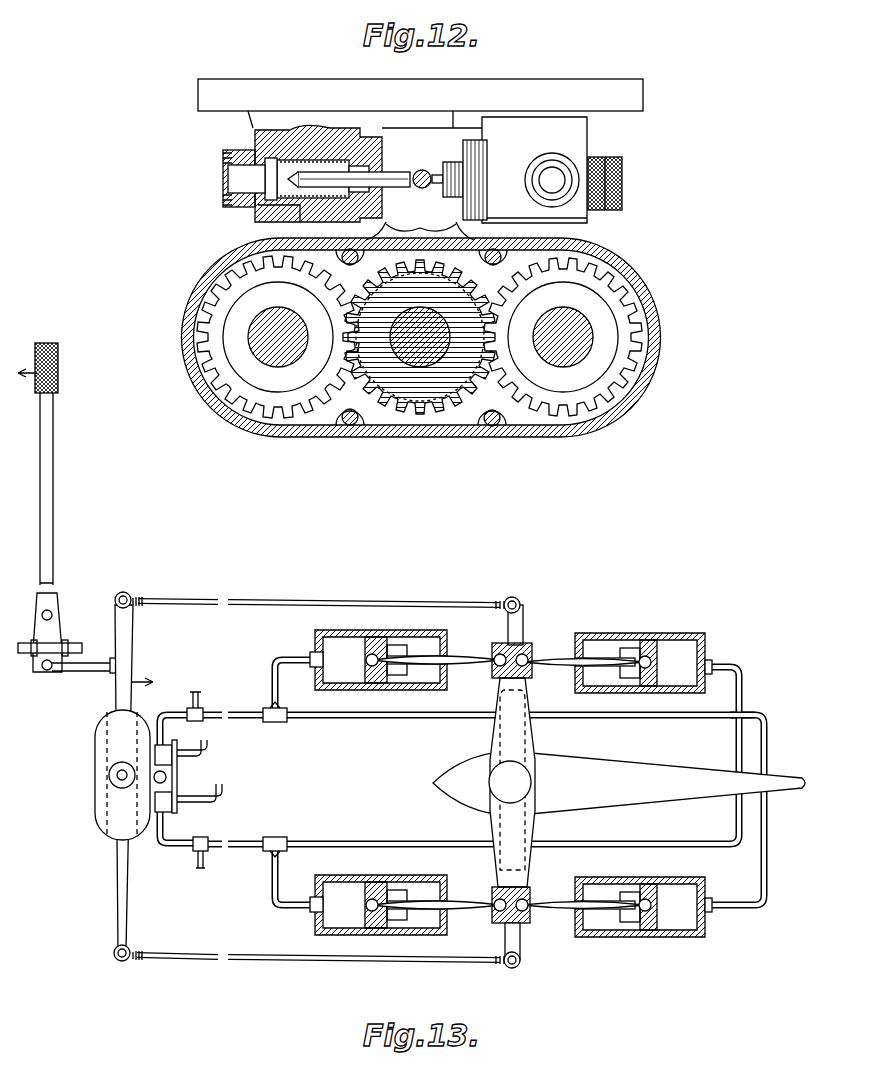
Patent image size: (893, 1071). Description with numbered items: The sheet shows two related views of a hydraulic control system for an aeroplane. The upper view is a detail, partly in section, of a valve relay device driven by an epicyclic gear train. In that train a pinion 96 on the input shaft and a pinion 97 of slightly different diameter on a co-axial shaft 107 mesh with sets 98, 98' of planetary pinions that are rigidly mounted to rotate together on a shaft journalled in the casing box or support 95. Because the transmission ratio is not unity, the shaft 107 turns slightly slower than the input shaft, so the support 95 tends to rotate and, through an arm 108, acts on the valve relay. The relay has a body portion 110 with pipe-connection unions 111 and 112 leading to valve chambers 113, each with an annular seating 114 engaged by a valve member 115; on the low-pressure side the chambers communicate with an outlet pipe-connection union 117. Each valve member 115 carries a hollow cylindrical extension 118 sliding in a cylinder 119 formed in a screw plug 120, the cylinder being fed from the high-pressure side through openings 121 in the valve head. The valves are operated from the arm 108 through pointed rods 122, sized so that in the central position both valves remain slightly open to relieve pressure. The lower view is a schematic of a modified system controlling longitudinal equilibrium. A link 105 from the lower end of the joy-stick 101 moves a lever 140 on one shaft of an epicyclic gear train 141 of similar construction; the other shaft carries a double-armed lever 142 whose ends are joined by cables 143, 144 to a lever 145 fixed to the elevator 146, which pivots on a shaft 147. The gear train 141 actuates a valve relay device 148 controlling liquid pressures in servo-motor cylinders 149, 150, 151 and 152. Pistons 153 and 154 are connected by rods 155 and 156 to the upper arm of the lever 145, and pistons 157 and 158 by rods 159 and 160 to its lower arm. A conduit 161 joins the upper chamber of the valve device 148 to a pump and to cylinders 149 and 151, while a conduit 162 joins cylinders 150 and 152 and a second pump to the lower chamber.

In FIG. 12, the casing box or support 95 is at (660, 338).
In FIG. 12, the pinion 96 is at (470, 398).
In FIG. 12, the pinion 97 is at (432, 410).
In FIG. 12, the set of planetary pinions 98 is at (581, 337).
In FIG. 12, the set of planetary pinions 98' is at (278, 352).
In FIG. 13, the joy-stick 101 is at (52, 478).
In FIG. 13, the link 105 is at (88, 671).
In FIG. 12, the shaft 107 is at (410, 355).
In FIG. 12, the arm 108 is at (424, 169).
In FIG. 12, the body portion 110 is at (340, 96).
In FIG. 12, the pipe-connection union 111 is at (228, 165).
In FIG. 12, the pipe-connection union 112 is at (612, 172).
In FIG. 12, the valve chamber 113 is at (258, 150).
In FIG. 12, the annular seating 114 is at (273, 156).
In FIG. 12, the valve member 115 is at (295, 180).
In FIG. 12, the outlet pipe-connection union 117 is at (548, 186).
In FIG. 12, the hollow cylindrical extension 118 is at (312, 150).
In FIG. 12, the cylinder 119 is at (343, 130).
In FIG. 12, the screw plug 120 is at (385, 200).
In FIG. 12, the opening 121 is at (262, 205).
In FIG. 12, the pointed rod 122 is at (377, 178).
In FIG. 13, the lever 140 is at (122, 742).
In FIG. 13, the epicyclic gear train 141 is at (98, 775).
In FIG. 13, the double-armed lever 142 is at (118, 895).
In FIG. 13, the cable 143 is at (255, 600).
In FIG. 13, the cable 144 is at (258, 962).
In FIG. 13, the lever 145 is at (533, 738).
In FIG. 13, the elevator 146 is at (602, 793).
In FIG. 13, the shaft 147 is at (505, 780).
In FIG. 13, the valve relay device 148 is at (180, 772).
In FIG. 13, the servo-motor cylinder 149 is at (345, 630).
In FIG. 13, the servo-motor cylinder 150 is at (630, 640).
In FIG. 13, the servo-motor cylinder 151 is at (683, 937).
In FIG. 13, the servo-motor cylinder 152 is at (345, 935).
In FIG. 13, the piston 153 is at (380, 640).
In FIG. 13, the piston 154 is at (650, 642).
In FIG. 13, the rod 155 is at (465, 656).
In FIG. 13, the rod 156 is at (555, 657).
In FIG. 13, the piston 157 is at (640, 935).
In FIG. 13, the piston 158 is at (385, 930).
In FIG. 13, the rod 159 is at (550, 900).
In FIG. 13, the rod 160 is at (462, 900).
In FIG. 13, the conduit 161 is at (238, 712).
In FIG. 13, the conduit 162 is at (185, 850).